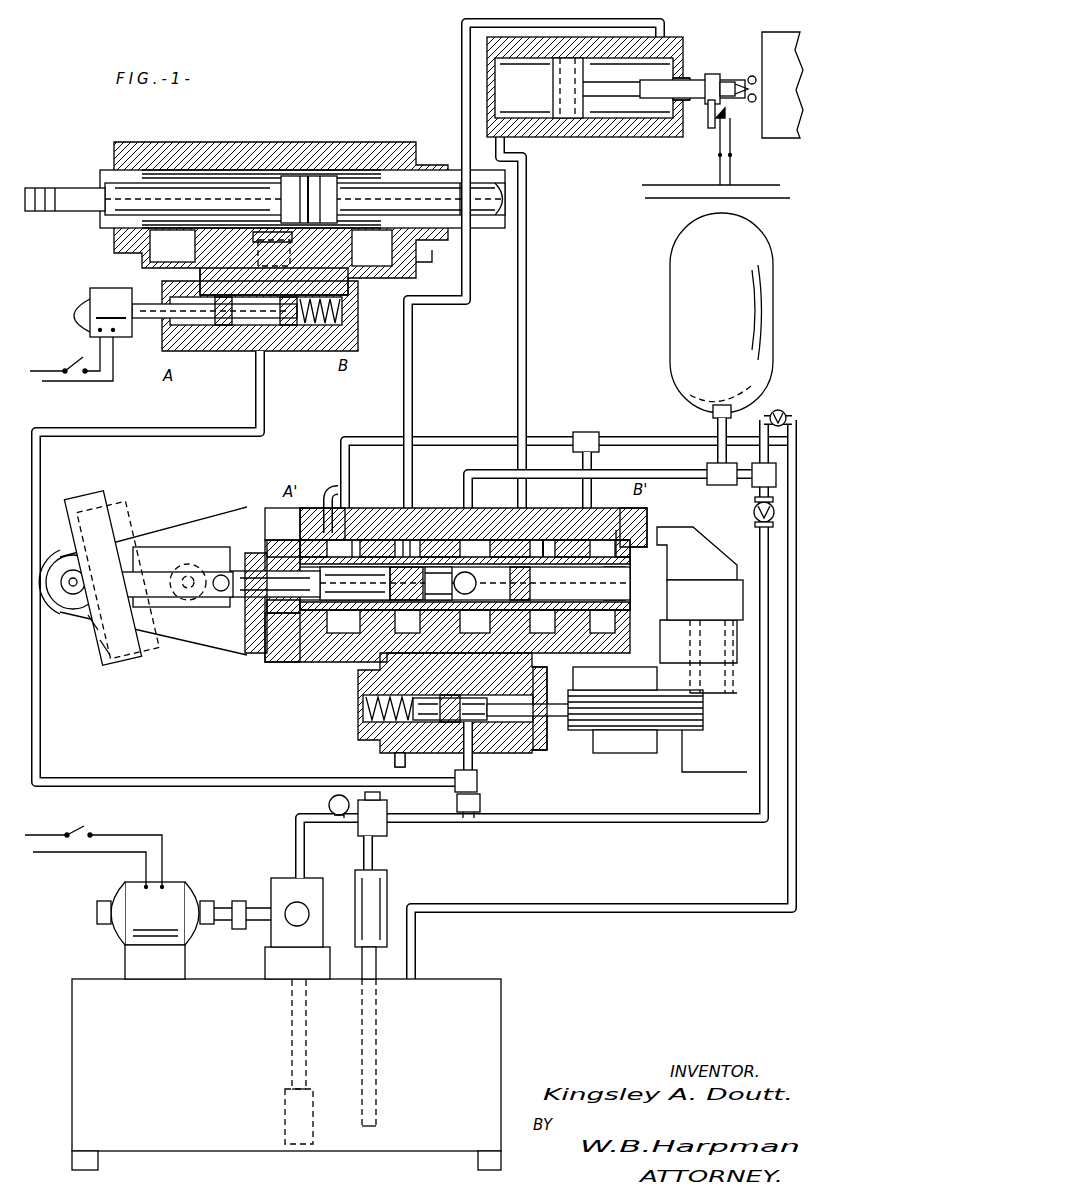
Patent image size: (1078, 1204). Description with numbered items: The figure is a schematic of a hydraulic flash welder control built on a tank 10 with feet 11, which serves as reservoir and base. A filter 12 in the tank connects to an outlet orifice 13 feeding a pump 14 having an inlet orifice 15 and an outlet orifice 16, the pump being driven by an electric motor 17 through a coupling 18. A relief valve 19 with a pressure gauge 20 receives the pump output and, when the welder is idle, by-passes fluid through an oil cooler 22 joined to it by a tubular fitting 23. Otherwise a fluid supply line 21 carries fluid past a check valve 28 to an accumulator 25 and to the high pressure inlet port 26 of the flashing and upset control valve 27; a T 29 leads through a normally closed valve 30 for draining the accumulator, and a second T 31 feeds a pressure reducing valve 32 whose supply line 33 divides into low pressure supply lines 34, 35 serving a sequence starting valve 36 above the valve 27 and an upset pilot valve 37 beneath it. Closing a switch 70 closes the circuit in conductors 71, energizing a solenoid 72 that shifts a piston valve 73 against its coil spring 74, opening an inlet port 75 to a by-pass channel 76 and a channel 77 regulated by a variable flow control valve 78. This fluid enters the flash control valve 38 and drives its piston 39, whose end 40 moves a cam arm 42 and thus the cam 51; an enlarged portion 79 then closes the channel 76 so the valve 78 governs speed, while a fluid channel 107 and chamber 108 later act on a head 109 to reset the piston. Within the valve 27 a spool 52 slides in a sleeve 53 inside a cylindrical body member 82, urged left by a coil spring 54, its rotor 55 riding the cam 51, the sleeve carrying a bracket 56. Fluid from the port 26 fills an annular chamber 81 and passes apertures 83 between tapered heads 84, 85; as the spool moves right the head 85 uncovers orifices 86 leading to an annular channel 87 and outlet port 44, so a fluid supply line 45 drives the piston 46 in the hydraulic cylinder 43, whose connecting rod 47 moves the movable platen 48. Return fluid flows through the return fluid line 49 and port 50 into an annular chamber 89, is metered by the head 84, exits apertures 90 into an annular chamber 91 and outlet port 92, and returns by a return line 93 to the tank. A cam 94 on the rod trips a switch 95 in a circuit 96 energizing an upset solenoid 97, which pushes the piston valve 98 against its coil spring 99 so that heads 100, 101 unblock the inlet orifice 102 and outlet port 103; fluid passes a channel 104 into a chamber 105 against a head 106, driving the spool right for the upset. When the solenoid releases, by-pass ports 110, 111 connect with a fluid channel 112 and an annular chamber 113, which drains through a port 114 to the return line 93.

The tank 10 is at (218, 1040).
The projecting feet 11 is at (72, 1162).
The filter 12 is at (285, 1120).
The outlet orifice 13 is at (266, 968).
The pump 14 is at (318, 920).
The inlet orifice 15 is at (300, 905).
The outlet orifice 16 is at (294, 858).
The electric motor 17 is at (165, 921).
The coupling 18 is at (239, 900).
The relief valve 19 is at (378, 812).
The pressure gauge 20 is at (329, 805).
The fluid supply line 21 is at (505, 472).
The oil cooler 22 is at (390, 880).
The tubular fitting 23 is at (375, 852).
The accumulator 25 is at (730, 329).
The high pressure inlet port 26 is at (460, 540).
The flashing and upset control valve 27 is at (497, 530).
The check valve 28 is at (755, 525).
The T 29 is at (758, 470).
The normally closed valve 30 is at (782, 410).
The second T 31 is at (470, 822).
The pressure reducing valve 32 is at (482, 803).
The supply line 33 is at (478, 784).
The low pressure supply line 34 is at (266, 378).
The low pressure supply line 35 is at (476, 766).
The sequence starting valve 36 is at (135, 252).
The upset pilot valve 37 is at (398, 765).
The flash control valve 38 is at (335, 176).
The piston 39 is at (180, 192).
The piston end 40 is at (80, 212).
The cam arm 42 is at (113, 510).
The hydraulic cylinder 43 is at (614, 128).
The outlet port 44 is at (545, 538).
The fluid supply line 45 is at (532, 160).
The piston 46 is at (552, 75).
The connecting rod 47 is at (705, 78).
The movable platen 48 is at (790, 138).
The return fluid line 49 is at (461, 46).
The port 50 is at (412, 505).
The cam 51 is at (95, 640).
The spool 52 is at (198, 610).
The sleeve 53 is at (305, 655).
The coil spring 54 is at (697, 610).
The rotor 55 is at (160, 612).
The bracket 56 is at (734, 606).
The switch 70 is at (68, 369).
The conductors 71 is at (68, 383).
The solenoid 72 is at (103, 312).
The piston valve 73 is at (160, 320).
The coil spring 74 is at (342, 310).
The inlet port 75 is at (248, 352).
The by-pass channel 76 is at (425, 258).
The channel 77 is at (258, 260).
The variable flow control valve 78 is at (257, 237).
The enlarged portion 79 is at (455, 183).
The annular chamber 81 is at (440, 560).
The cylindrical body member 82 is at (640, 530).
The apertures 83 is at (438, 583).
The tapered head 84 is at (406, 583).
The tapered head 85 is at (520, 583).
The orifices 86 is at (475, 583).
The annular channel 87 is at (565, 538).
The annular chamber 89 is at (406, 545).
The apertures 90 is at (465, 583).
The annular chamber 91 is at (356, 540).
The outlet port 92 is at (330, 490).
The return line 93 is at (368, 440).
The cam 94 is at (708, 125).
The switch 95 is at (731, 150).
The circuit 96 is at (660, 198).
The upset solenoid 97 is at (648, 718).
The piston valve 98 is at (545, 735).
The coil spring 99 is at (365, 710).
The head 100 is at (450, 708).
The head 101 is at (570, 648).
The inlet orifice 102 is at (462, 740).
The outlet port 103 is at (452, 680).
The channel 104 is at (262, 656).
The chamber 105 is at (262, 597).
The head 106 is at (300, 560).
The fluid channel 107 is at (200, 275).
The chamber 108 is at (232, 172).
The head 109 is at (310, 180).
The by-pass port 110 is at (358, 680).
The by-pass port 111 is at (380, 740).
The fluid channel 112 is at (600, 672).
The annular chamber 113 is at (625, 515).
The port 114 is at (600, 495).